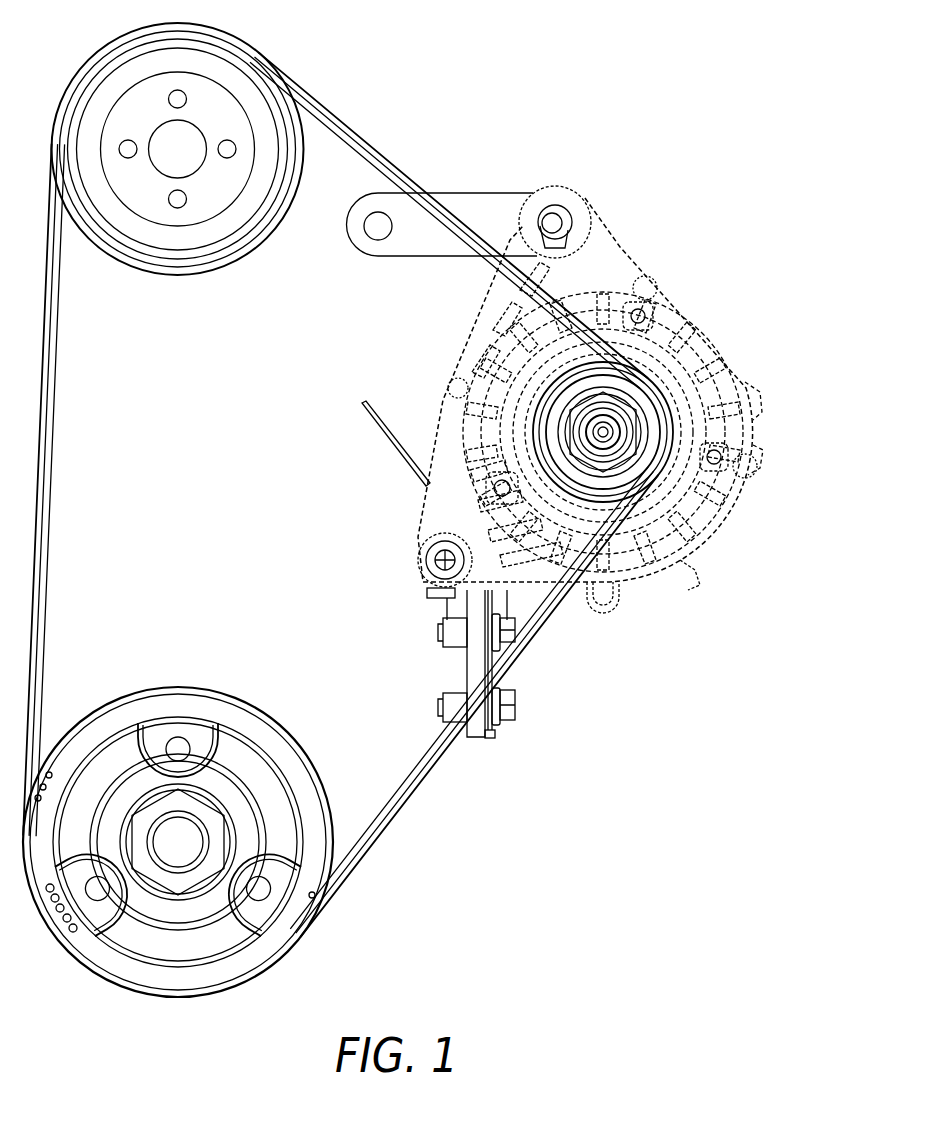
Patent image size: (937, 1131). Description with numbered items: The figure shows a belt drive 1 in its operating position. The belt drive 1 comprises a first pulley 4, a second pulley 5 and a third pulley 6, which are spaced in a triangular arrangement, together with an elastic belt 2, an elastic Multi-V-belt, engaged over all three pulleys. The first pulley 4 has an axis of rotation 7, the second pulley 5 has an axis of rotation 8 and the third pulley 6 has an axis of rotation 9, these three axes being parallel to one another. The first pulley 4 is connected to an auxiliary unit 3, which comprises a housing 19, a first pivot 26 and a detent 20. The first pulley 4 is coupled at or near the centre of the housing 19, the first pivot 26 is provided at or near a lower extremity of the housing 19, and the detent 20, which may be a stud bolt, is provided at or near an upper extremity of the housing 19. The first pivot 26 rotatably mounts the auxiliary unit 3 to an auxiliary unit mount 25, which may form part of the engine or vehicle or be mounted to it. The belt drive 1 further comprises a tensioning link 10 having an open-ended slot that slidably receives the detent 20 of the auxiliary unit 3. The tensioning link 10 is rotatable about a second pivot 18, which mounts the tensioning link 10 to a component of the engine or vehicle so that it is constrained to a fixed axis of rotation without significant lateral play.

The belt drive 1 is at (414, 80).
The elastic belt 2 is at (54, 507).
The auxiliary unit 3 is at (694, 372).
The first pulley 4 is at (660, 426).
The second pulley 5 is at (126, 72).
The third pulley 6 is at (93, 928).
The axis of rotation 7 is at (617, 433).
The axis of rotation 8 is at (178, 152).
The axis of rotation 9 is at (176, 838).
The tensioning link 10 is at (480, 184).
The second pivot 18 is at (372, 232).
The housing 19 is at (670, 296).
The detent 20 is at (575, 186).
The auxiliary unit mount 25 is at (472, 664).
The first pivot 26 is at (438, 558).